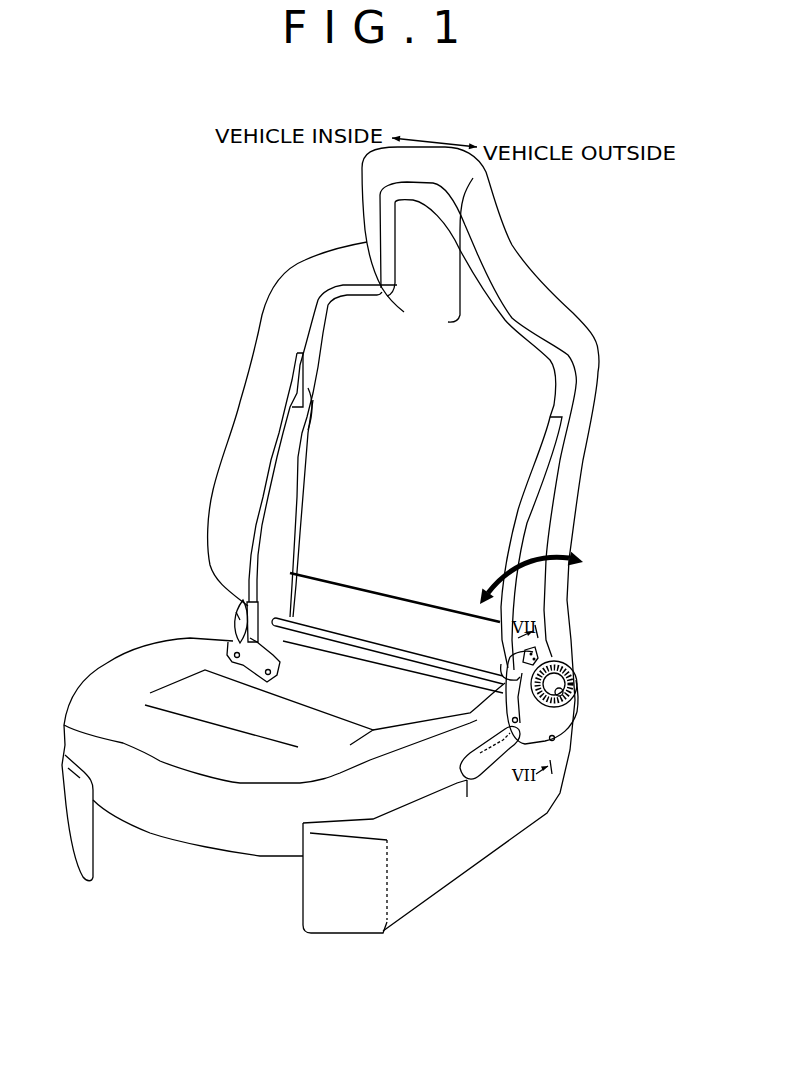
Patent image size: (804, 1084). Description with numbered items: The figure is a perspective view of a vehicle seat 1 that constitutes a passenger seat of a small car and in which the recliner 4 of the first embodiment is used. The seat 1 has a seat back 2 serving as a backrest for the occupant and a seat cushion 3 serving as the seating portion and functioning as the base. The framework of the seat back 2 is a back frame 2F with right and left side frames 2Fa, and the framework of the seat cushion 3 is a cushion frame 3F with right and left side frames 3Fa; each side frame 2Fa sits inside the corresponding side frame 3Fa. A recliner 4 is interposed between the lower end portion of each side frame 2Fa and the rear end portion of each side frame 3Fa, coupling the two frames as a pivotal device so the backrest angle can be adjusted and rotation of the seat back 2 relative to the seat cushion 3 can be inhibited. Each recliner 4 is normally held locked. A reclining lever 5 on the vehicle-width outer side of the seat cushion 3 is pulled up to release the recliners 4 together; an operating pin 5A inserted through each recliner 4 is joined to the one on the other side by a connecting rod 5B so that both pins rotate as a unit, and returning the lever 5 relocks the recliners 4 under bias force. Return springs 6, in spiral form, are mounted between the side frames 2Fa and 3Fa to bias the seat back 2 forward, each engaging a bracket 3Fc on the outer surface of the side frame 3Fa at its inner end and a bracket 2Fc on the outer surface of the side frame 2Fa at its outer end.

The seat 1 is at (175, 238).
The seat back 2 is at (262, 320).
The back frame 2F is at (318, 298).
The side frame of back frame 2Fa is at (275, 508).
The bracket 2Fc is at (247, 600).
The seat cushion 3 is at (108, 660).
The cushion frame 3F is at (383, 683).
The side frame of cushion frame 3Fa is at (232, 628).
The bracket 3Fc is at (572, 676).
The recliner 4 is at (245, 607).
The reclining lever 5 is at (500, 757).
The operating pin 5A is at (292, 619).
The connecting rod 5B is at (377, 646).
The return spring 6 is at (232, 614).